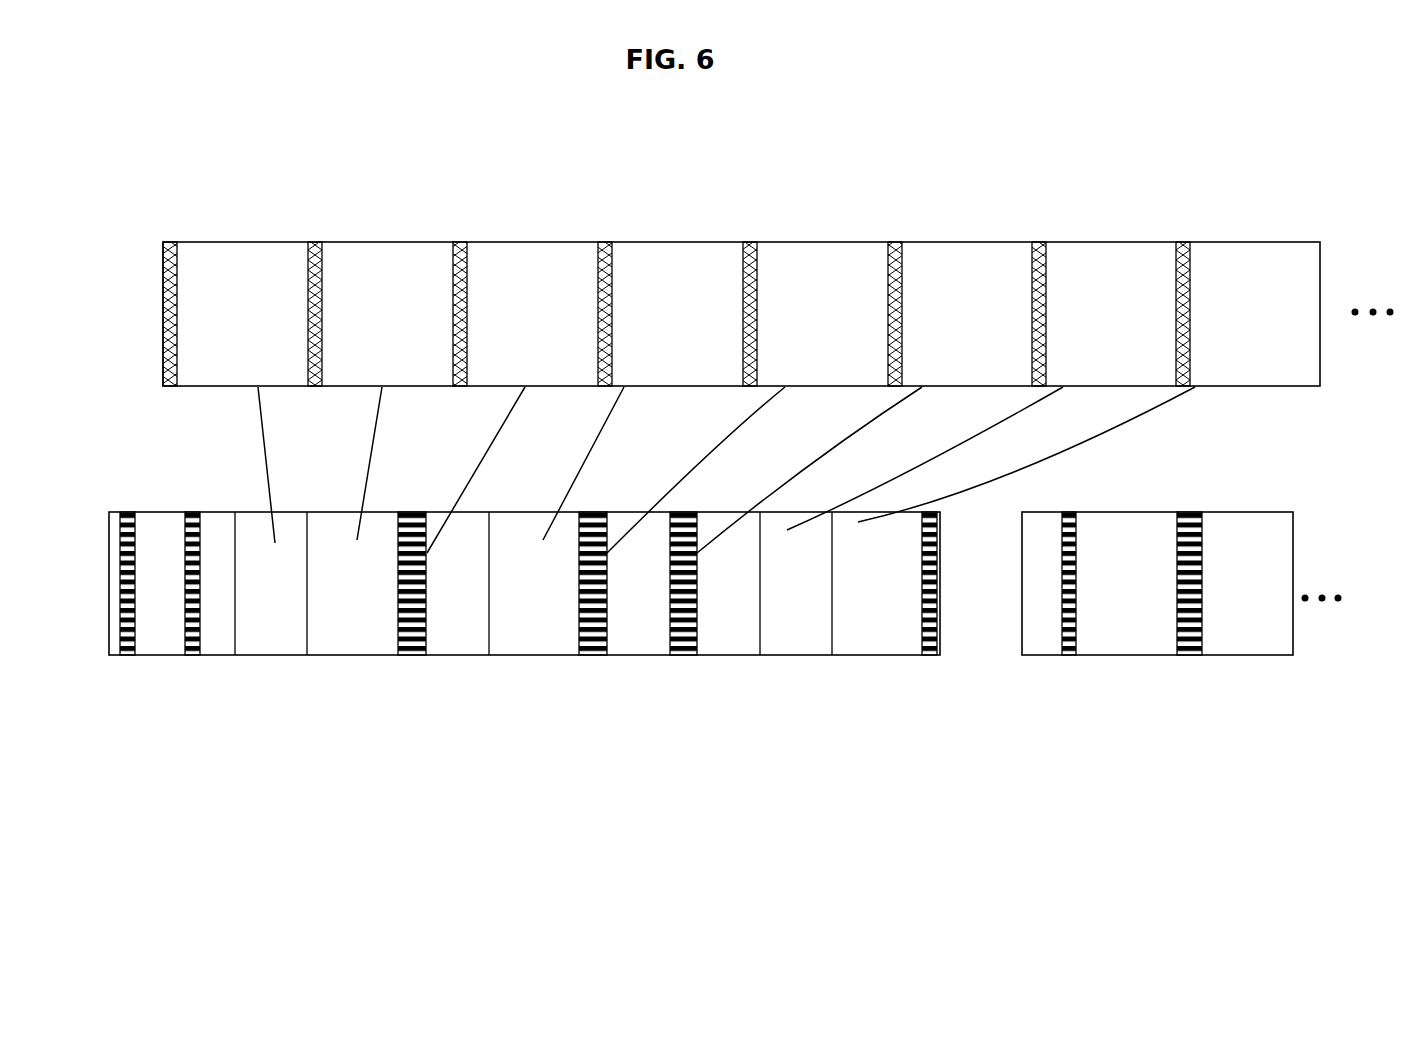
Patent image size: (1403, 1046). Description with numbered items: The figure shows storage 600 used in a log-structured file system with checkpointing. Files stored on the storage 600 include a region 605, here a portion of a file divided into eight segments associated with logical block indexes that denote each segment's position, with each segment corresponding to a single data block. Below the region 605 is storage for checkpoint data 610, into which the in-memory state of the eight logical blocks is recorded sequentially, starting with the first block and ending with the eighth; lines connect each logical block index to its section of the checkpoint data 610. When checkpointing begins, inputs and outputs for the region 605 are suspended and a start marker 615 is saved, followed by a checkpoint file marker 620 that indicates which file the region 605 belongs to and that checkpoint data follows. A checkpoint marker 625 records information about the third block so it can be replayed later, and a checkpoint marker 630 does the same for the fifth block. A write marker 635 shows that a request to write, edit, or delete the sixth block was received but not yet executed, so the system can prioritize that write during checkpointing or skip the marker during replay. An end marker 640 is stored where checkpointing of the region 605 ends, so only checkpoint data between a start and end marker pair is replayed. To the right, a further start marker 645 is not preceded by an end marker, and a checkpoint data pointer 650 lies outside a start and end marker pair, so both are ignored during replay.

The storage 600 is at (328, 131).
The region 605 is at (168, 230).
The checkpoint data 610 is at (940, 800).
The start marker 615 is at (120, 655).
The checkpoint file marker 620 is at (186, 655).
The checkpoint marker 625 is at (405, 655).
The checkpoint marker 630 is at (590, 655).
The write marker 635 is at (680, 655).
The end marker 640 is at (925, 655).
The start marker 645 is at (1068, 655).
The checkpoint data pointer 650 is at (1180, 655).